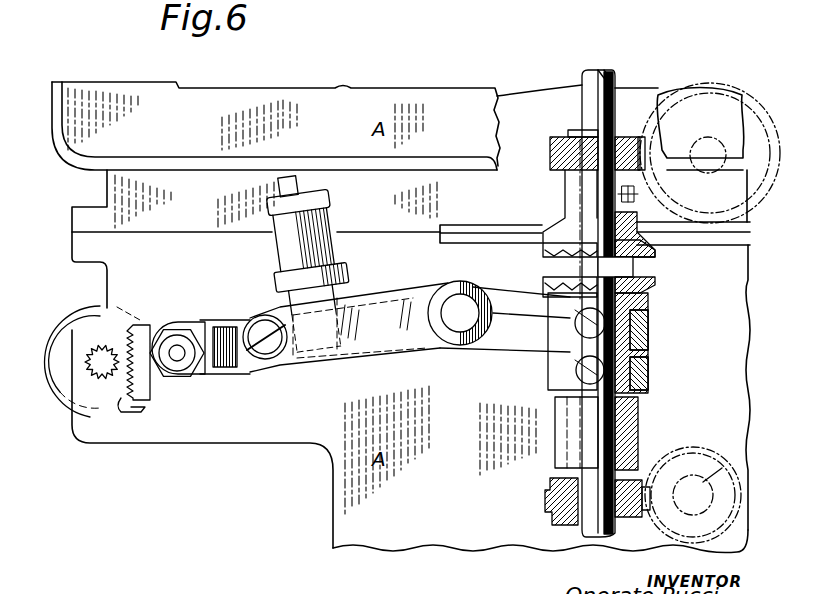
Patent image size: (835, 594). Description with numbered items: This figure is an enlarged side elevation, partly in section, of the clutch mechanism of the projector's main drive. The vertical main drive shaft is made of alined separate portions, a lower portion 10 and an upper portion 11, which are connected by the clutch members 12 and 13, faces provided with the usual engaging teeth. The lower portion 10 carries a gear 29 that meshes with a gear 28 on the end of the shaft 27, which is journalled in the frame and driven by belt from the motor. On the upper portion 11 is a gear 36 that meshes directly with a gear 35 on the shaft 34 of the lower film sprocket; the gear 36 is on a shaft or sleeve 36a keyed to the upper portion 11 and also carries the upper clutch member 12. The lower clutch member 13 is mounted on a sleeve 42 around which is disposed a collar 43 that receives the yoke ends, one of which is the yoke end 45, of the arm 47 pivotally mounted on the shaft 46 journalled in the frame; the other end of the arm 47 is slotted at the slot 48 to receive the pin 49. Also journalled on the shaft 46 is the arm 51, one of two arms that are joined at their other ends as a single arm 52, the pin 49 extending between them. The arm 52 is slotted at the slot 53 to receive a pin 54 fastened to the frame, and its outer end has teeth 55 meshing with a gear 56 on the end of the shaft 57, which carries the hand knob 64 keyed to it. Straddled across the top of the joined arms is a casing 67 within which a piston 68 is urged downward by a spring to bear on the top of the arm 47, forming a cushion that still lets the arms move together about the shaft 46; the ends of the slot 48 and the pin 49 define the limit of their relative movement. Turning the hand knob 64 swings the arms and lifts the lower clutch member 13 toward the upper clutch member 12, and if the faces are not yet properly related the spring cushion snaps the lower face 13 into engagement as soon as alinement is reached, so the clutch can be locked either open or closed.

The lower portion of main drive shaft 10 is at (638, 420).
The upper portion of main drive shaft 11 is at (582, 104).
The upper clutch member 12 is at (658, 252).
The lower clutch member 13 is at (655, 283).
The shaft 27 is at (746, 467).
The gear 28 is at (693, 450).
The gear 29 is at (548, 492).
The shaft 34 is at (698, 142).
The gear 35 is at (668, 118).
The gear 36 is at (549, 140).
The sleeve 36a is at (563, 196).
The sleeve 42 is at (649, 368).
The collar 43 is at (649, 325).
The yoke end 45 is at (515, 348).
The shaft 46 is at (468, 298).
The arm 47 is at (414, 290).
The slot 48 is at (258, 310).
The pin 49 is at (278, 358).
The arm 51 is at (389, 352).
The arm 52 is at (186, 322).
The slot 53 is at (175, 302).
The pin 54 is at (197, 376).
The teeth 55 is at (143, 412).
The gear 56 is at (104, 376).
The shaft 57 is at (110, 340).
The hand knob 64 is at (58, 340).
The casing 67 is at (322, 224).
The piston 68 is at (338, 289).